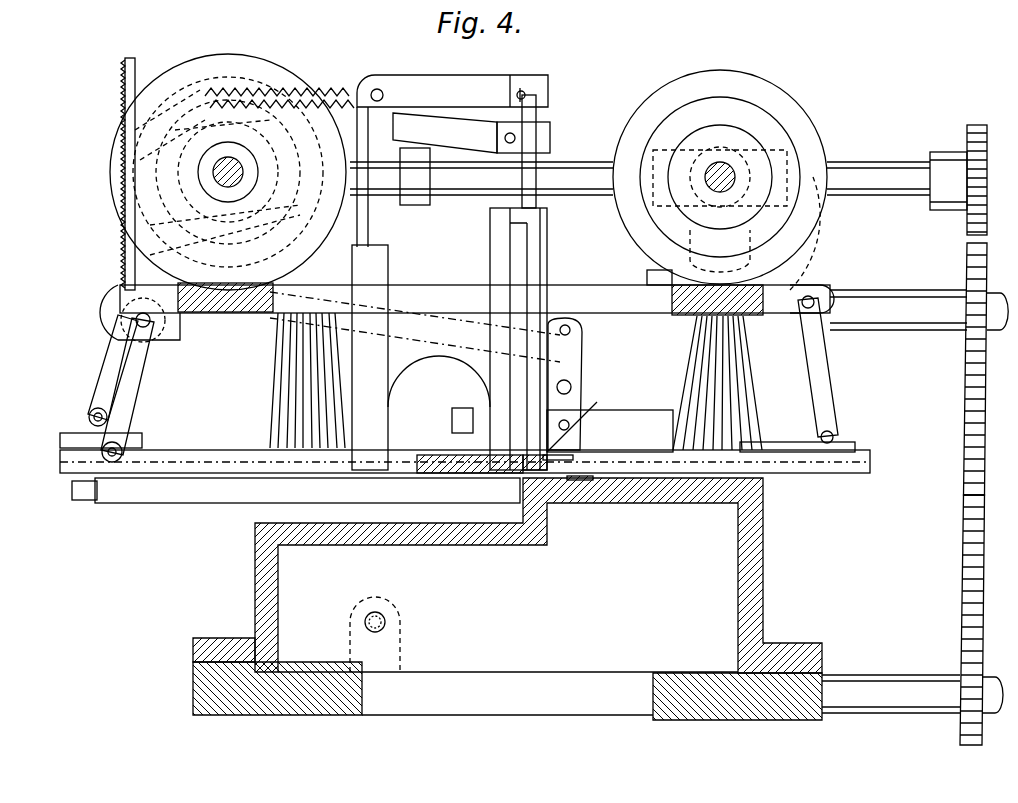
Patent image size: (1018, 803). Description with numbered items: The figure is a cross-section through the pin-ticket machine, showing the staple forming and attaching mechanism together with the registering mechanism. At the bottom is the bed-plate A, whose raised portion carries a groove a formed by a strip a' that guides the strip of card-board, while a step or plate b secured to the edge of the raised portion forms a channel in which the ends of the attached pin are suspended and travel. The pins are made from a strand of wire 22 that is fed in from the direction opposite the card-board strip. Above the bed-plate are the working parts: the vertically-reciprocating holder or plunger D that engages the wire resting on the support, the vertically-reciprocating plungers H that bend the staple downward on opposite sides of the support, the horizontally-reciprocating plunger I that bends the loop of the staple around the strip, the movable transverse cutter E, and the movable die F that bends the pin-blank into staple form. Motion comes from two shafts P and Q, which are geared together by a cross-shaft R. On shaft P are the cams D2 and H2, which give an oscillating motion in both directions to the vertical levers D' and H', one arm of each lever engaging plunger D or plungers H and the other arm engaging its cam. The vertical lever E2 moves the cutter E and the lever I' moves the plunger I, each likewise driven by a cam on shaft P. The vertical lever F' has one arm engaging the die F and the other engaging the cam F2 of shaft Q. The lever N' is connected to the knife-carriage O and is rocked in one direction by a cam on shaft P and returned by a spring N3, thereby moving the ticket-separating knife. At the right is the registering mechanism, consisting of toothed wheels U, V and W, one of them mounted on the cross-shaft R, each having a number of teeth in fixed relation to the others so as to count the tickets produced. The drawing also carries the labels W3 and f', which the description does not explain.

The bed-plate A is at (677, 525).
The horizontally-reciprocating plunger I is at (288, 488).
The movable transverse cutter E is at (461, 442).
The movable die F is at (797, 440).
The lever N' is at (475, 360).
The knife-carriage O is at (562, 430).
The strand of wire 22 is at (582, 421).
The cam H2 is at (132, 132).
The shaft P is at (228, 172).
The cam D2 is at (172, 80).
The spring N3 is at (124, 100).
The vertical lever D' is at (452, 91).
The vertical lever H' is at (453, 177).
The holder or plunger D is at (553, 151).
The vertically-reciprocating plunger H is at (325, 334).
The cross-shaft R is at (481, 176).
The shaft Q is at (720, 177).
The cam F2 is at (750, 122).
The vertical lever F' is at (824, 364).
The registering wheel U is at (916, 180).
The registering wheel V is at (919, 369).
The registering wheel W is at (983, 620).
The shaft W3 is at (912, 681).
The vertical lever E2 is at (108, 374).
The lever I' is at (140, 373).
The step or plate b is at (526, 490).
The pin f' is at (558, 501).
The groove a is at (580, 503).
The strip a' is at (597, 501).